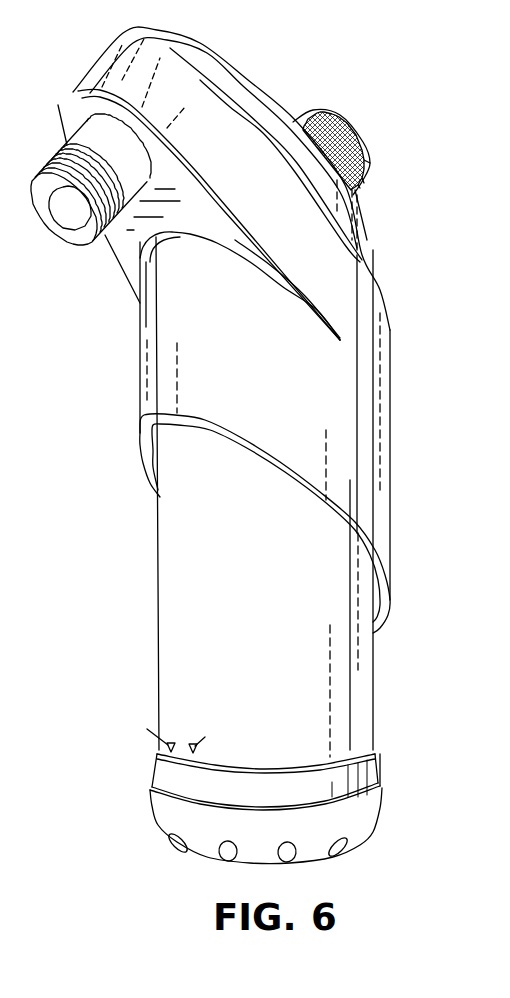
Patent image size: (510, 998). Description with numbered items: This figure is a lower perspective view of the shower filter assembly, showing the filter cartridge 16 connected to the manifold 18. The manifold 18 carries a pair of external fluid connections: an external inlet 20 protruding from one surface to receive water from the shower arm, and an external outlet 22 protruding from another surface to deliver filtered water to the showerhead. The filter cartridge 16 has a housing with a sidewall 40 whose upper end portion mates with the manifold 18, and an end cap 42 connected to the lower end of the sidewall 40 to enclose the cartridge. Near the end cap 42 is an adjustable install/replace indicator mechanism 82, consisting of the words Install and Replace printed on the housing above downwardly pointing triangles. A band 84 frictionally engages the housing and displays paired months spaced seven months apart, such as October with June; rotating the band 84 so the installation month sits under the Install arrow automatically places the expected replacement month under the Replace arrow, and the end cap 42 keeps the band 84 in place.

The filter cartridge 16 is at (235, 450).
The manifold 18 is at (210, 178).
The external inlet 20 is at (325, 150).
The external outlet 22 is at (92, 133).
The sidewall 40 is at (177, 635).
The end cap 42 is at (363, 827).
The install/replace indicator mechanism 82 is at (227, 710).
The band 84 is at (372, 763).